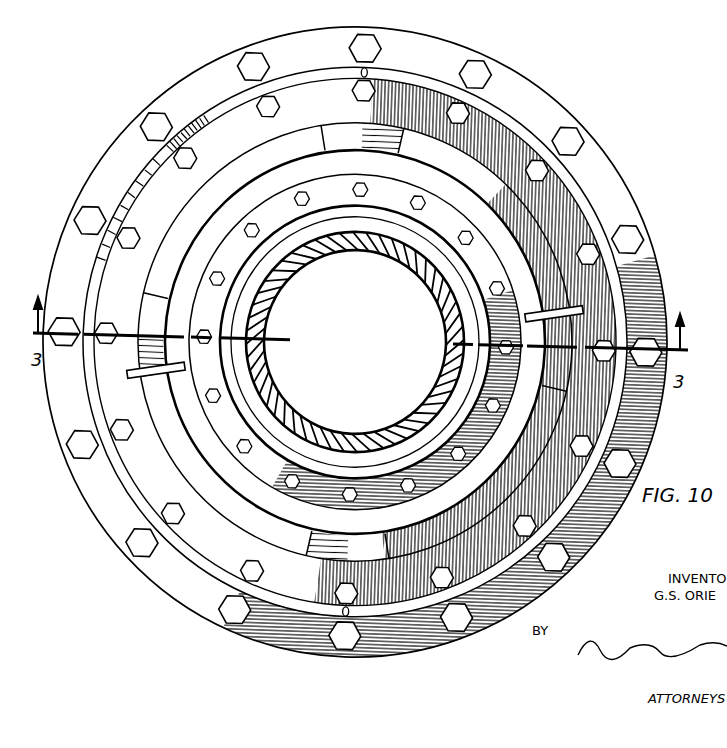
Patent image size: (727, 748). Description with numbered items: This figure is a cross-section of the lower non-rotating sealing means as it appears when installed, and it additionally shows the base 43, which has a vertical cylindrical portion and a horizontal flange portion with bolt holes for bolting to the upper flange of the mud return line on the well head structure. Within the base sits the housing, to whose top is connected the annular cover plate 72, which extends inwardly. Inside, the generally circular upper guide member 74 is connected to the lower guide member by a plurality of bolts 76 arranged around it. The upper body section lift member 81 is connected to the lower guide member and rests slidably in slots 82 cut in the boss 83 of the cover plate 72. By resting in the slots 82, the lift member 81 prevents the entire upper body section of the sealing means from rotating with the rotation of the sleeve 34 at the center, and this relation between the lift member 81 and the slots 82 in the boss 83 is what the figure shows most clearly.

The sleeve 34 is at (440, 332).
The base 43 is at (655, 400).
The annular cover plate 72 is at (105, 393).
The upper guide member 74 is at (472, 286).
The bolts 76 is at (477, 403).
The upper body section lift member 81 is at (150, 384).
The slots 82 is at (432, 152).
The boss 83 is at (337, 127).